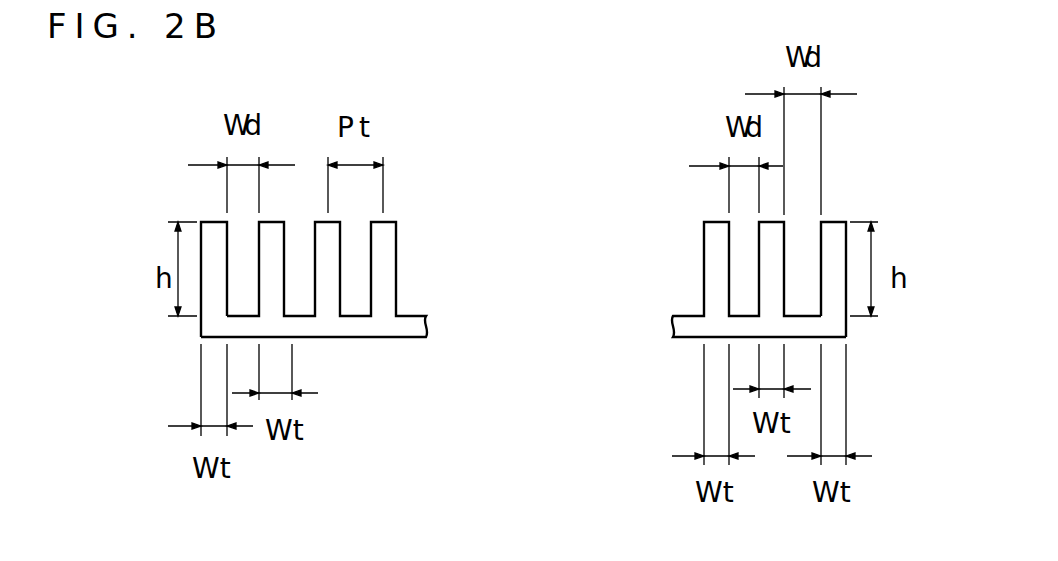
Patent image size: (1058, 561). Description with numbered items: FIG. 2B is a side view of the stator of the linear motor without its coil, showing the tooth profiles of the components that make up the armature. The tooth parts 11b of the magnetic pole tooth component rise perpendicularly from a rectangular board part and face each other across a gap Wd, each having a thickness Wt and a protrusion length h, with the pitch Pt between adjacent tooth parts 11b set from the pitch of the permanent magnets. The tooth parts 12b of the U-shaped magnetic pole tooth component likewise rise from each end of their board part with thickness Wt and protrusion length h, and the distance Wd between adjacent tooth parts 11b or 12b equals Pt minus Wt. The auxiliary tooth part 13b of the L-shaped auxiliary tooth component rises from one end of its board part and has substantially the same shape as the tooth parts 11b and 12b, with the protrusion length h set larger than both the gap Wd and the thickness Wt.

The tooth part 11b is at (278, 222).
The tooth part 12b is at (765, 222).
The auxiliary tooth part 13b is at (213, 222).